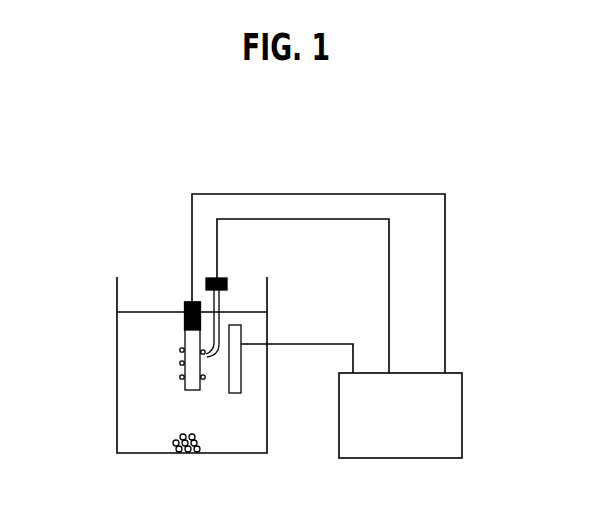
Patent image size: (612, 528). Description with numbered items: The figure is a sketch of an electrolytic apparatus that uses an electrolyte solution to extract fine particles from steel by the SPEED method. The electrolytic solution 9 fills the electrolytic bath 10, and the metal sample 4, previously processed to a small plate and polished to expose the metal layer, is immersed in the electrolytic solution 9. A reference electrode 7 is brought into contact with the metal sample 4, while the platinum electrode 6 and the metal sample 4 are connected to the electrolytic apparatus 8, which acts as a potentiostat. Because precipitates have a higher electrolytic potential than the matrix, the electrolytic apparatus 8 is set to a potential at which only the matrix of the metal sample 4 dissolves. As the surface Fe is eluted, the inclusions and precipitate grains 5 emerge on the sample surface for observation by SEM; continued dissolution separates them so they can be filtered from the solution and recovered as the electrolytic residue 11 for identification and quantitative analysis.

The metal sample 4 is at (185, 338).
The inclusions and precipitate grains 5 is at (182, 382).
The platinum electrode 6 is at (235, 372).
The reference electrode 7 is at (222, 302).
The electrolytic apparatus 8 is at (462, 432).
The electrolytic solution 9 is at (142, 354).
The electrolytic bath 10 is at (117, 427).
The electrolytic residue 11 is at (197, 435).